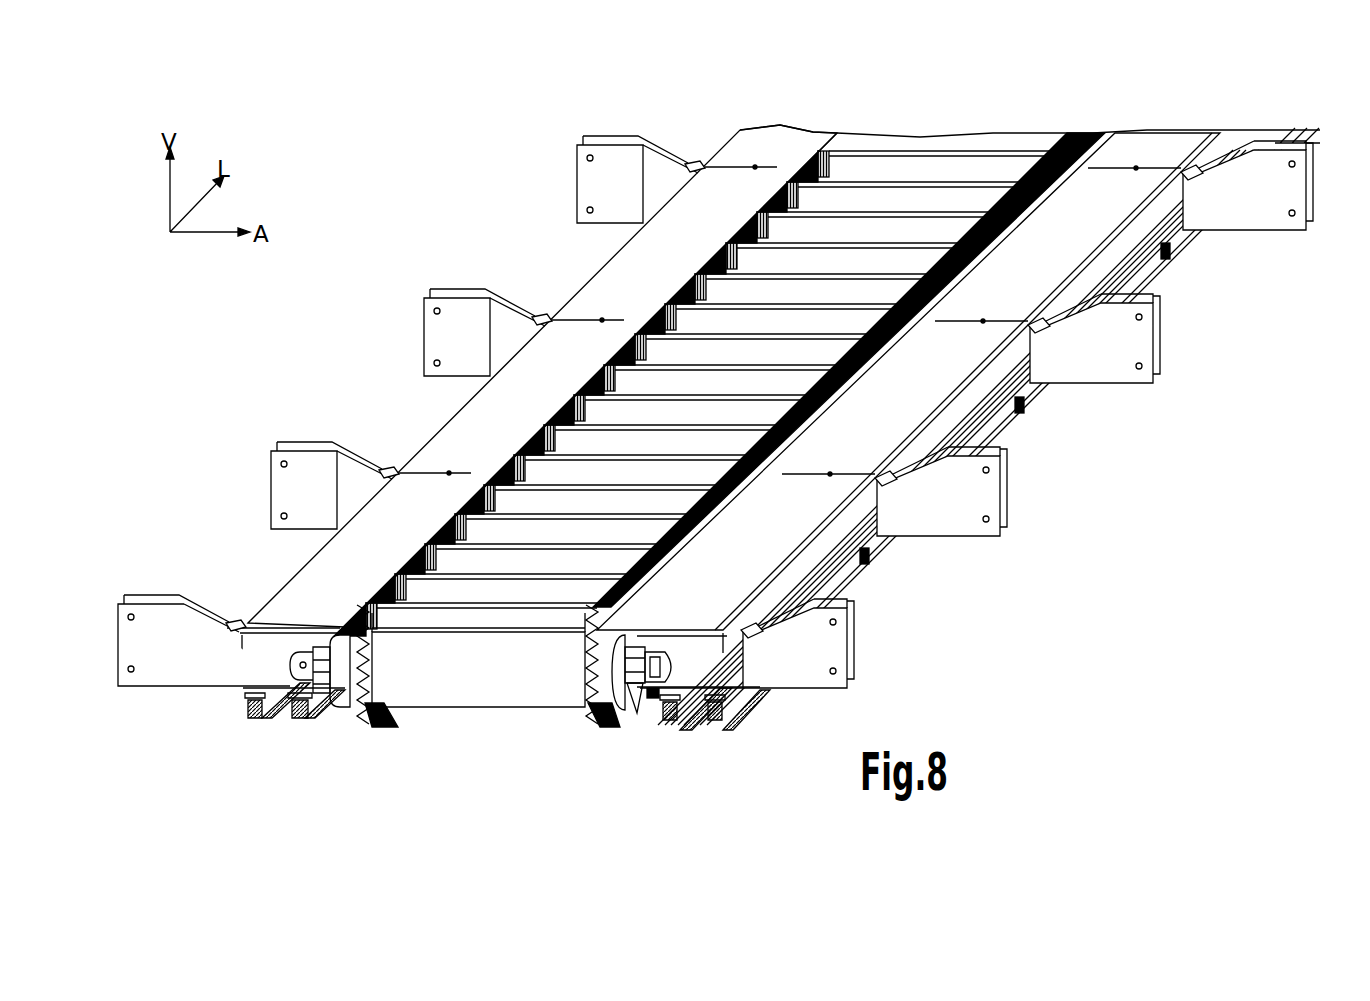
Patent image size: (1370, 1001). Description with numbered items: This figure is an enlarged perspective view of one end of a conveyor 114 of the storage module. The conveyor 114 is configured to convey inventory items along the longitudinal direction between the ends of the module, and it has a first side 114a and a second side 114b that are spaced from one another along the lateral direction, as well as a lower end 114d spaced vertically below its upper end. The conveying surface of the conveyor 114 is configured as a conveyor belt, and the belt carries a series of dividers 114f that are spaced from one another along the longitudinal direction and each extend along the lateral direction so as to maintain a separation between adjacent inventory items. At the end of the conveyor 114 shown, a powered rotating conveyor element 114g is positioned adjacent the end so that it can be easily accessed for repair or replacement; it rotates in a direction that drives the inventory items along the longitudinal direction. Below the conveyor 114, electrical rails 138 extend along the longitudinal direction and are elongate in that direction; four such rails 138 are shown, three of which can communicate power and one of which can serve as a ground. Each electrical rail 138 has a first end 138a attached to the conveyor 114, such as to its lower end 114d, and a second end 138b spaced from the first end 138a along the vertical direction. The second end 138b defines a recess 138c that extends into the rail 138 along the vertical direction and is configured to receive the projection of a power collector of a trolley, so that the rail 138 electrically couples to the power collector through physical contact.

The conveyor 114 is at (727, 205).
The first side 114a is at (848, 535).
The second side 114b is at (597, 302).
The lower end 114d is at (510, 710).
The dividers 114f is at (507, 477).
The powered rotating conveyor element 114g is at (485, 672).
The electrical rail 138 is at (243, 700).
The first end 138a is at (300, 687).
The second end 138b is at (293, 713).
The recess 138c is at (253, 724).